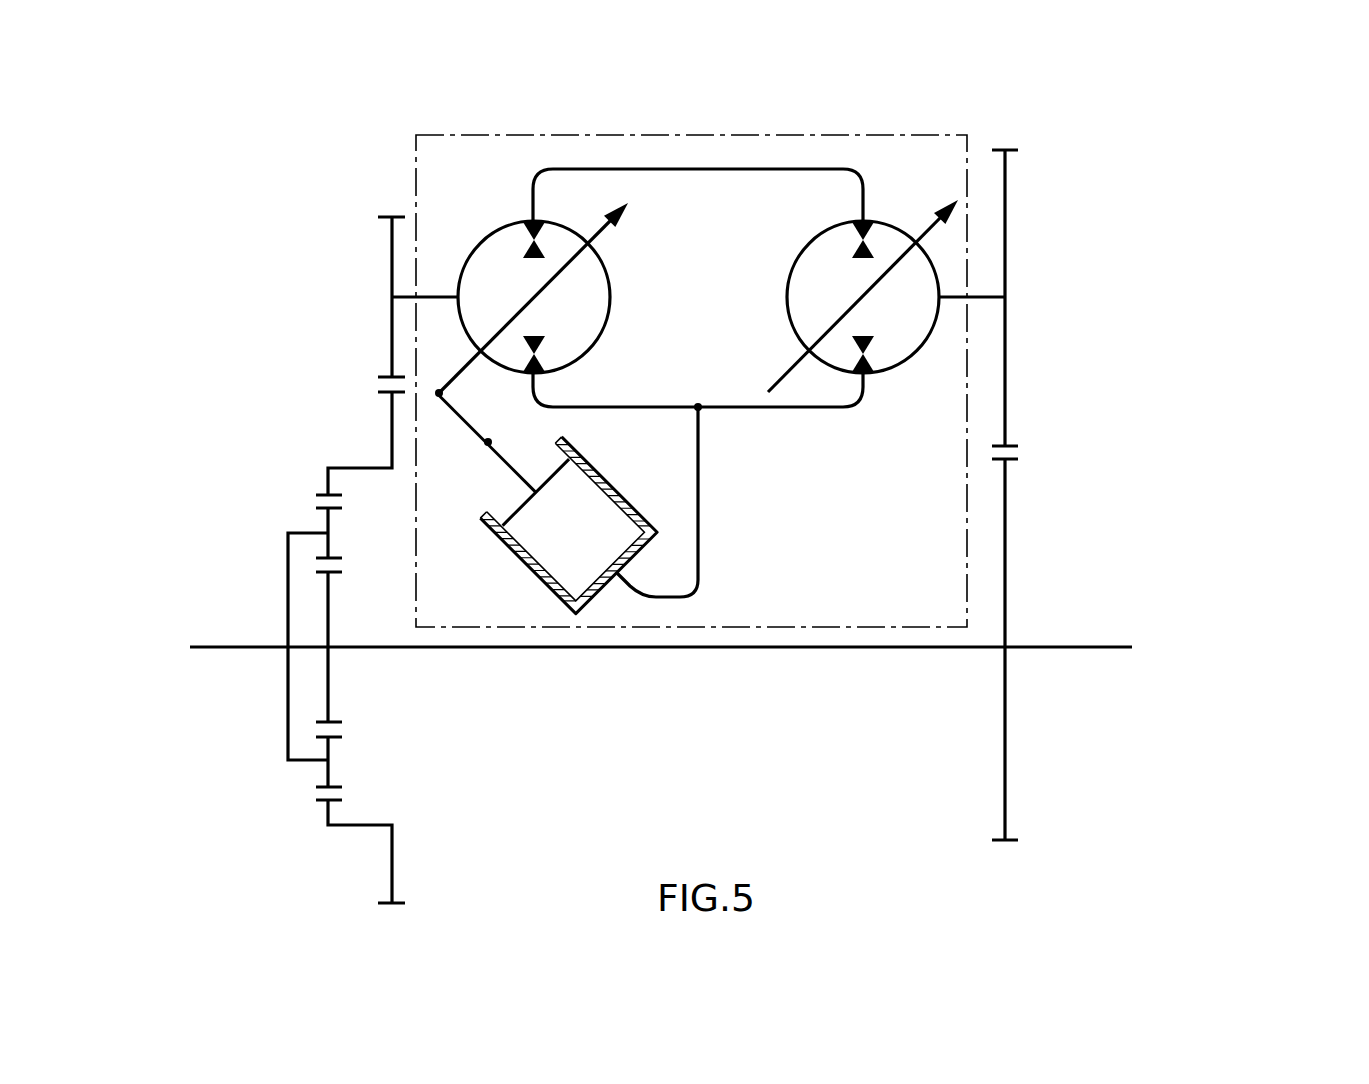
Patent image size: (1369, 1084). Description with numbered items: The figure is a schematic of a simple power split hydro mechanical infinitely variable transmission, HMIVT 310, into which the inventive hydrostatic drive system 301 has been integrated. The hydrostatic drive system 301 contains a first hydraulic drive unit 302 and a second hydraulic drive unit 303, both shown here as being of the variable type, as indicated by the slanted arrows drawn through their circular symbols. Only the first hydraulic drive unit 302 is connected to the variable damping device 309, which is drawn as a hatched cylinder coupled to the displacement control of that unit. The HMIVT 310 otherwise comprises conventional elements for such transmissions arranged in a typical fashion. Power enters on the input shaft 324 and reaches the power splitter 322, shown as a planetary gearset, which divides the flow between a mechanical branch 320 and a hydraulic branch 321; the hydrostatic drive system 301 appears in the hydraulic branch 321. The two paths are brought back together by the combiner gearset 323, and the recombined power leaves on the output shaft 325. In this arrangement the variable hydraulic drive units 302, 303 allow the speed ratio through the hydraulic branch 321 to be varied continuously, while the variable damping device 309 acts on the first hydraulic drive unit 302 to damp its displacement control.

The hydrostatic drive system 301 is at (416, 158).
The first hydraulic drive unit 302 is at (606, 272).
The second hydraulic drive unit 303 is at (787, 312).
The variable damping device 309 is at (728, 498).
The HMIVT 310 is at (1170, 137).
The mechanical branch 320 is at (712, 705).
The hydraulic branch 321 is at (360, 262).
The power splitter 322 is at (280, 466).
The combiner gearset 323 is at (1070, 440).
The input shaft 324 is at (233, 647).
The output shaft 325 is at (1054, 647).